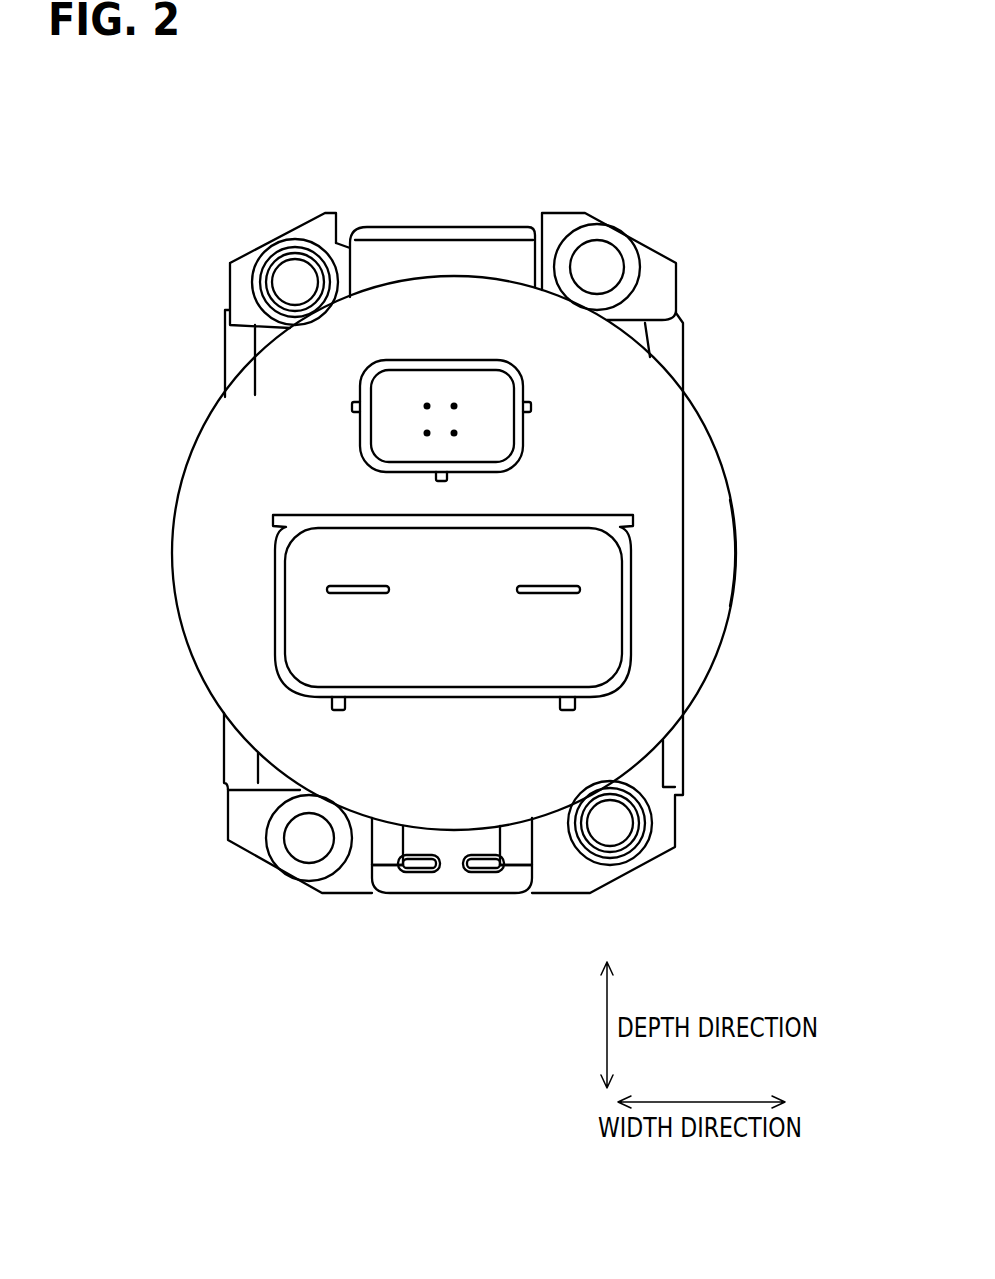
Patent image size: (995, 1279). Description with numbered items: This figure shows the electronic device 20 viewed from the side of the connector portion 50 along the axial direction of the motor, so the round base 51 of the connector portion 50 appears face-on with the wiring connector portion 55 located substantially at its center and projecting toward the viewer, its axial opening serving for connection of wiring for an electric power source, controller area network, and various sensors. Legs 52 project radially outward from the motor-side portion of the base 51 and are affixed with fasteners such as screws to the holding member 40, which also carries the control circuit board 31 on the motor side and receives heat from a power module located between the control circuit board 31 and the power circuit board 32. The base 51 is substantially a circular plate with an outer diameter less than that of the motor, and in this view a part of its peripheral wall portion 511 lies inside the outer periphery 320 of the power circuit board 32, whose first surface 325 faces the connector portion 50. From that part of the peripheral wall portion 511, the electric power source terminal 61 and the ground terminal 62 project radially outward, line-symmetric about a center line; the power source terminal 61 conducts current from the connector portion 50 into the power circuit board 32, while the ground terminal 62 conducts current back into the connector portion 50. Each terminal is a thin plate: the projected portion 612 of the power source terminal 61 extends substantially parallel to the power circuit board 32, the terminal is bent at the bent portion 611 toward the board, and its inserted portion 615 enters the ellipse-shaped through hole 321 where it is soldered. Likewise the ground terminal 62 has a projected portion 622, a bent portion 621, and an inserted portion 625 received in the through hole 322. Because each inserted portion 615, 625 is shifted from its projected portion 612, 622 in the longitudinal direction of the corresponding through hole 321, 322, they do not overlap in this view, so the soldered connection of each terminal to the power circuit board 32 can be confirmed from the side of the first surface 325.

The electronic device 20 is at (489, 687).
The connector portion 50 is at (489, 643).
The base 51 is at (492, 553).
The peripheral wall portion 511 is at (786, 553).
The legs 52 is at (451, 544).
The wiring connector portion 55 is at (535, 535).
The control circuit board 31 is at (196, 751).
The first surface 325 is at (222, 806).
The holding member 40 is at (300, 867).
The power circuit board 32 is at (496, 914).
The outer periphery 320 is at (452, 969).
The through hole 321 is at (482, 929).
The through hole 322 is at (410, 924).
The electric power source terminal 61 is at (504, 909).
The bent portion 611 is at (524, 922).
The projected portion 612 is at (521, 810).
The inserted portion 615 is at (497, 961).
The ground terminal 62 is at (396, 897).
The bent portion 621 is at (374, 914).
The projected portion 622 is at (383, 810).
The inserted portion 625 is at (425, 949).